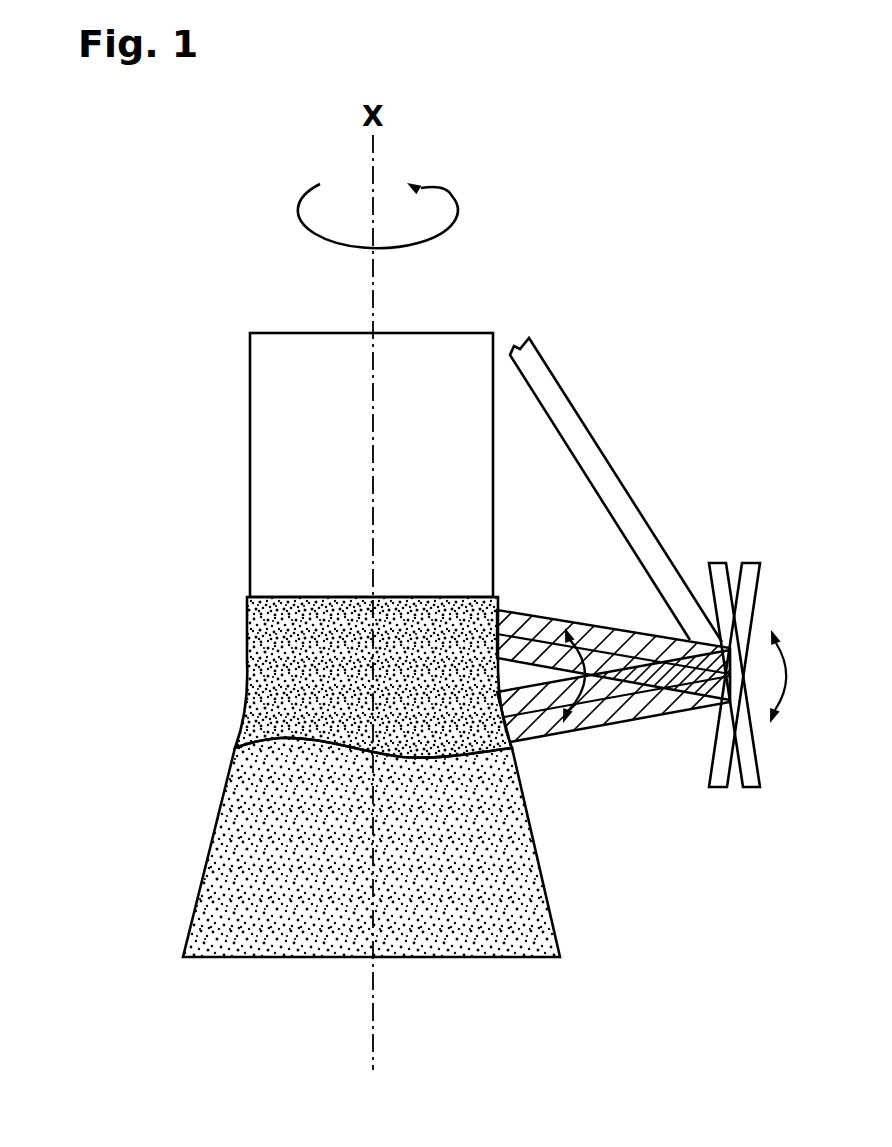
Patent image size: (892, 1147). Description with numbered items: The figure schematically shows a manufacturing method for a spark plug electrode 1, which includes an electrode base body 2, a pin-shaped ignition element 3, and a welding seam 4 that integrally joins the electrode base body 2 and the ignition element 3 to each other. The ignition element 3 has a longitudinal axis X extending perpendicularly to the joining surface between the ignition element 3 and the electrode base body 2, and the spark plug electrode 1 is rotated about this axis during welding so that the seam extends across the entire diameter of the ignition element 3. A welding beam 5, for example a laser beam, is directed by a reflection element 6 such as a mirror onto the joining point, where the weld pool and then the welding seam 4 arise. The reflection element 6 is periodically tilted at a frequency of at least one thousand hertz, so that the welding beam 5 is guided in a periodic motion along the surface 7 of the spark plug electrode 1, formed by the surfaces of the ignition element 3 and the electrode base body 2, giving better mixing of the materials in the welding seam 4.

The spark plug electrode 1 is at (176, 259).
The electrode base body 2 is at (220, 875).
The ignition element 3 is at (265, 400).
The welding seam 4 is at (265, 652).
The welding beam 5 is at (558, 393).
The reflection element 6 is at (696, 771).
The surface 7 is at (503, 601).